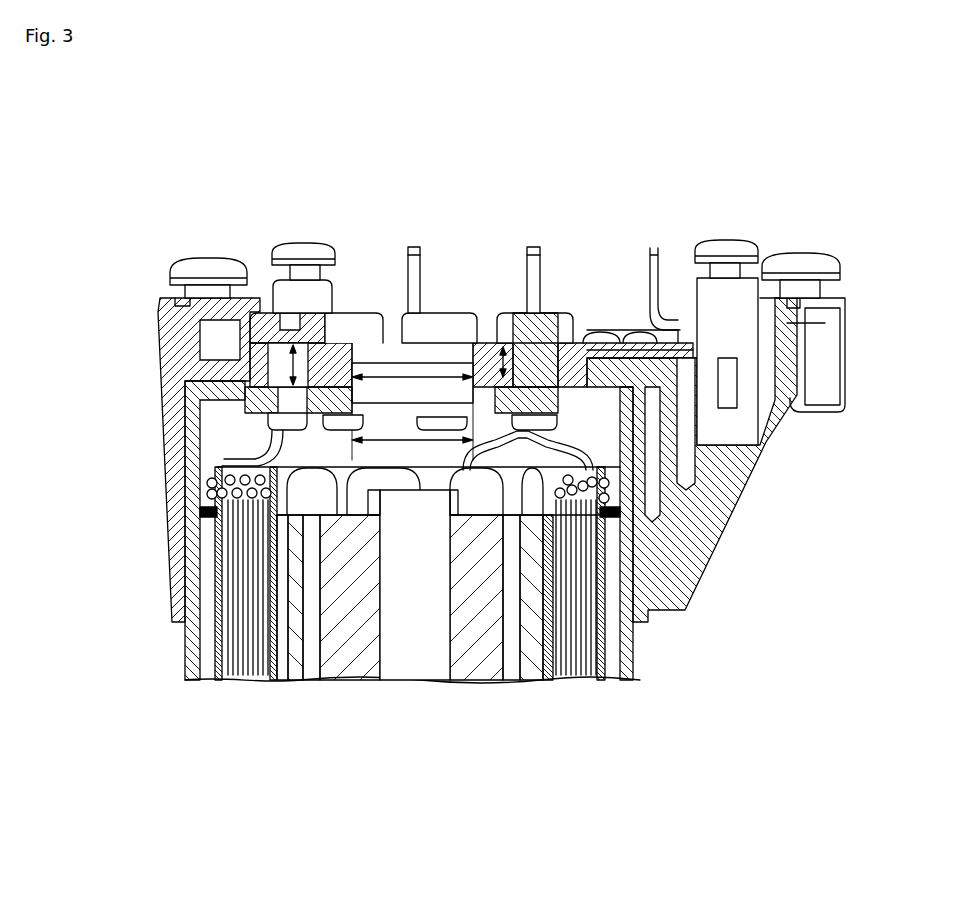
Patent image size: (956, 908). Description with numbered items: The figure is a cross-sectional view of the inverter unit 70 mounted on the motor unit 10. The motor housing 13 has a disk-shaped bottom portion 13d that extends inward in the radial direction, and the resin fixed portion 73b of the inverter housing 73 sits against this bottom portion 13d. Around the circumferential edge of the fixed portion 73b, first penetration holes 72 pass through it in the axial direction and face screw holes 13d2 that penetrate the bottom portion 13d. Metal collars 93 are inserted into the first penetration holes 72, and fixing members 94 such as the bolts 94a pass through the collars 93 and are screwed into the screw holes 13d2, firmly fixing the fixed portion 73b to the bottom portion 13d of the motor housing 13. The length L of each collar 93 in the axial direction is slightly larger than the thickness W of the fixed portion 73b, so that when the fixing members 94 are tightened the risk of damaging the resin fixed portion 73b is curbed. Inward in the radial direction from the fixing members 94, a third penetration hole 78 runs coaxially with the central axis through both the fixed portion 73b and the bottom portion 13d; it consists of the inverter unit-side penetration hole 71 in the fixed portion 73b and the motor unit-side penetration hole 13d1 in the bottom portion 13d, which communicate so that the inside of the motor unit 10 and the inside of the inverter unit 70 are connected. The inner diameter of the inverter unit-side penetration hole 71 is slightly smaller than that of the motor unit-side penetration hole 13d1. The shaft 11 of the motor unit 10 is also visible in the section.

The motor unit 10 is at (170, 672).
The shaft 11 is at (400, 662).
The motor housing 13 is at (193, 482).
The bottom portion 13d is at (190, 396).
The motor unit-side penetration hole 13d1 is at (384, 343).
The screw holes 13d2 is at (245, 330).
The inverter unit 70 is at (124, 289).
The inverter unit-side penetration hole 71 is at (455, 343).
The first penetration holes 72 is at (318, 335).
The inverter housing 73 is at (148, 351).
The fixed portion 73b is at (586, 343).
The third penetration hole 78 is at (427, 340).
The metal collars 93 is at (183, 330).
The fixing members 94 is at (505, 246).
The bolts 94a is at (262, 308).
The length of the collar L is at (292, 343).
The thickness of the fixed portion W is at (498, 340).